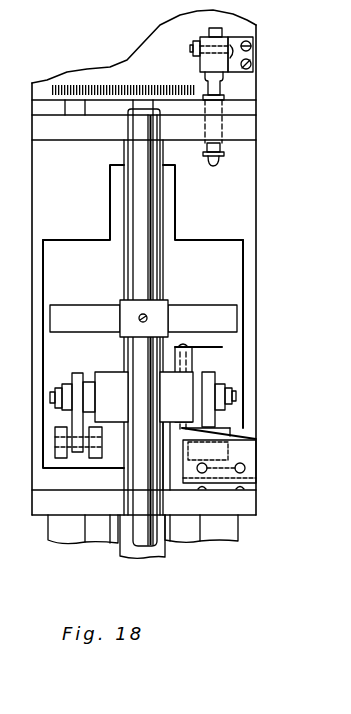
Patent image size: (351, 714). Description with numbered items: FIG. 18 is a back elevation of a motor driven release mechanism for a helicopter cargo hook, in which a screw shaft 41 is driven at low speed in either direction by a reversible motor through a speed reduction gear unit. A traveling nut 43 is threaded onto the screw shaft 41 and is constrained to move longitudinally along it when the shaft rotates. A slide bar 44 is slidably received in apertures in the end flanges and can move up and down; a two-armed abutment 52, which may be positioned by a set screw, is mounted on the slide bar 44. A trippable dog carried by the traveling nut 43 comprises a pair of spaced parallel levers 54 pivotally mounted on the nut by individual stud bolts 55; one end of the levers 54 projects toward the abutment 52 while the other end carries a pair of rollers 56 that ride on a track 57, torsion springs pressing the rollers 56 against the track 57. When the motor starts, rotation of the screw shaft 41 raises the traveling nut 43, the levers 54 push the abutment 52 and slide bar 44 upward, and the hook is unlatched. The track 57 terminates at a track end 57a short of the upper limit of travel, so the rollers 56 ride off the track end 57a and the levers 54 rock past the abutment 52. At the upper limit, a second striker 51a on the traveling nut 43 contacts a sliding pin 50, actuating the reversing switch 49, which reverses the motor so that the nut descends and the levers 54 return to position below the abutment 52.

The screw shaft 41 is at (162, 205).
The traveling nut 43 is at (117, 383).
The slide bar 44 is at (157, 282).
The reversing switch 49 is at (226, 38).
The sliding pin 50 is at (220, 160).
The second striker 51a is at (210, 347).
The two-armed abutment 52 is at (165, 300).
The levers 54 is at (78, 375).
The stud bolts 55 is at (52, 392).
The rollers 56 is at (63, 456).
The track 57 is at (95, 275).
The track end 57a is at (72, 238).